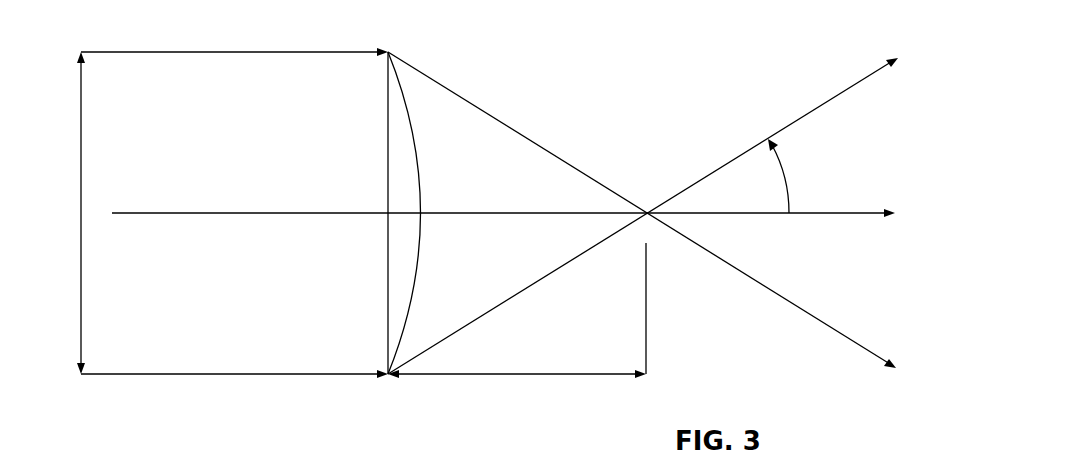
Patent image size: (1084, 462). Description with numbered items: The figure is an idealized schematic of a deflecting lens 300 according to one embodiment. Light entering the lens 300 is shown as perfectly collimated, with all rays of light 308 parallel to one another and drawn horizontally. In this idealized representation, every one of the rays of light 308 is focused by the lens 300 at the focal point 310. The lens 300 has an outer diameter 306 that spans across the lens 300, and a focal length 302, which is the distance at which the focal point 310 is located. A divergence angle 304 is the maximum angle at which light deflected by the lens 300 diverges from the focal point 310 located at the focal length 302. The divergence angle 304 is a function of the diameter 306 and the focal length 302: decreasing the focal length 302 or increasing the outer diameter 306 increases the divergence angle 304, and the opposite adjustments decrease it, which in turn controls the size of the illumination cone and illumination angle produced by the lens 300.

The lens 300 is at (408, 90).
The focal length 302 is at (517, 374).
The divergence angle 304 is at (788, 176).
The outer diameter 306 is at (82, 197).
The rays of light 308 is at (230, 52).
The focal point 310 is at (648, 212).